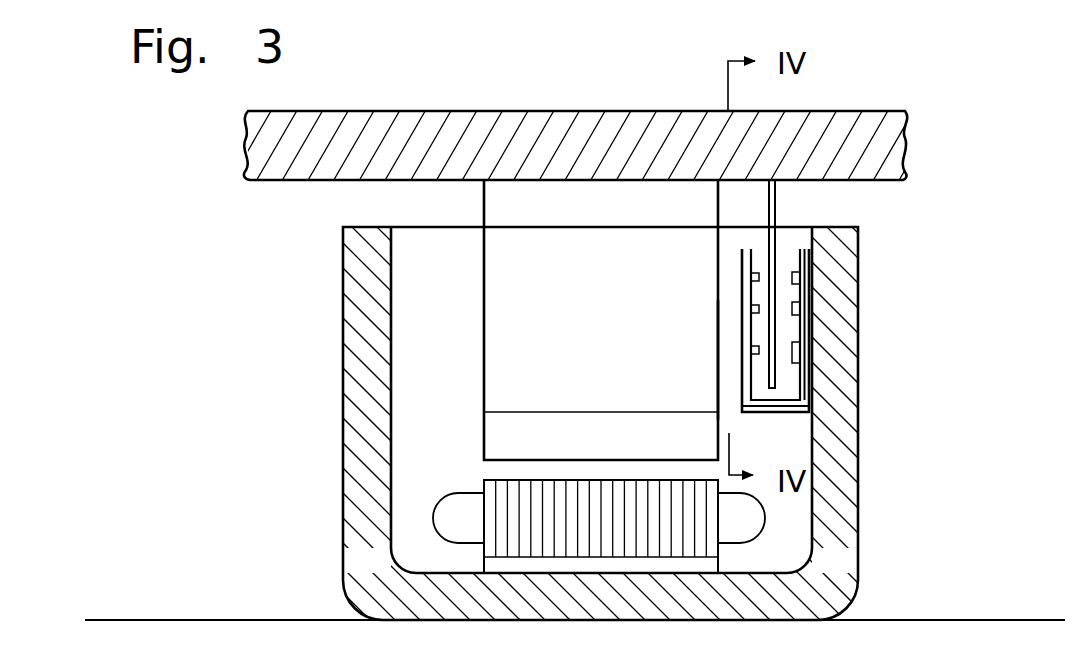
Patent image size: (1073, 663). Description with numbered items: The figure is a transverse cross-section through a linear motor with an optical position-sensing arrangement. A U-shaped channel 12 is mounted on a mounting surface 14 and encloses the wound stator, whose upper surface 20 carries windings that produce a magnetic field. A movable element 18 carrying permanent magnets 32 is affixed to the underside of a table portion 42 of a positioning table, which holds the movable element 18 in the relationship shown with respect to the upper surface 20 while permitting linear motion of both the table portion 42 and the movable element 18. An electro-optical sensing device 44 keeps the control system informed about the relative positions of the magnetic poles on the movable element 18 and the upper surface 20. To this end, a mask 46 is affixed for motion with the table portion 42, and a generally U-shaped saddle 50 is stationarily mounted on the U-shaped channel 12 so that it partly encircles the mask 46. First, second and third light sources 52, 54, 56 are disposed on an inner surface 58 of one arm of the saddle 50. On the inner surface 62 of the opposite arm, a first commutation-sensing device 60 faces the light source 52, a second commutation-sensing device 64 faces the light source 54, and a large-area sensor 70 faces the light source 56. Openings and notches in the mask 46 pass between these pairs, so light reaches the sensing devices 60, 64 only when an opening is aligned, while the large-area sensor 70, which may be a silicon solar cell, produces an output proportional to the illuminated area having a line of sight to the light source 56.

The U-shaped channel 12 is at (858, 245).
The mounting surface 14 is at (946, 620).
The movable element 18 is at (430, 297).
The upper surface 20 is at (500, 515).
The permanent magnets 32 is at (498, 441).
The table portion 42 is at (522, 138).
The electro-optical sensing device 44 is at (722, 362).
The mask 46 is at (768, 219).
The saddle 50 is at (803, 392).
The first light source 52 is at (757, 277).
The second light source 54 is at (757, 309).
The third light source 56 is at (757, 350).
The inner surface 58 is at (753, 378).
The first commutation-sensing device 60 is at (800, 277).
The inner surface 62 is at (803, 272).
The second commutation-sensing device 64 is at (800, 309).
The large-area sensor 70 is at (800, 349).